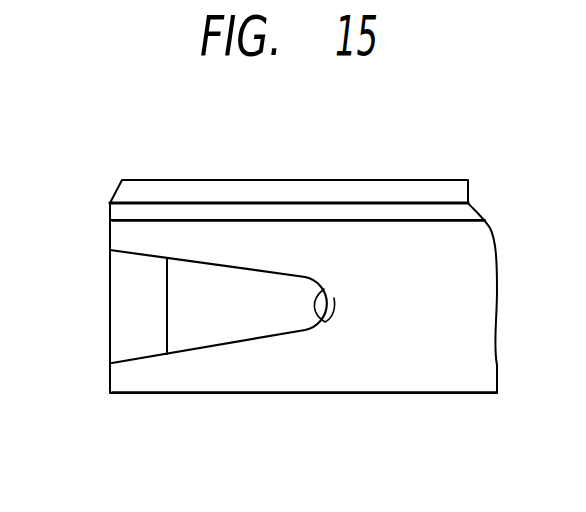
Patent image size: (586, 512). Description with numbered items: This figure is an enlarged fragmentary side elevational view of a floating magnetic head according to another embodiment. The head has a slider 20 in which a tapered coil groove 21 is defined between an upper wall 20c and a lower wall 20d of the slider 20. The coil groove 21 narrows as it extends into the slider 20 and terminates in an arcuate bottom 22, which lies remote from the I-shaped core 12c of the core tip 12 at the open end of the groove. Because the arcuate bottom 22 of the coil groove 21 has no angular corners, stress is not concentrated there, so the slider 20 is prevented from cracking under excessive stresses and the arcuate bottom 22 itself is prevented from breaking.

The slider 20 is at (420, 199).
The upper wall 20c is at (243, 240).
The lower wall 20d is at (193, 373).
The core tip 12 is at (109, 303).
The I-shaped core 12c is at (112, 347).
The tapered coil groove 21 is at (253, 318).
The arcuate bottom 22 is at (325, 322).